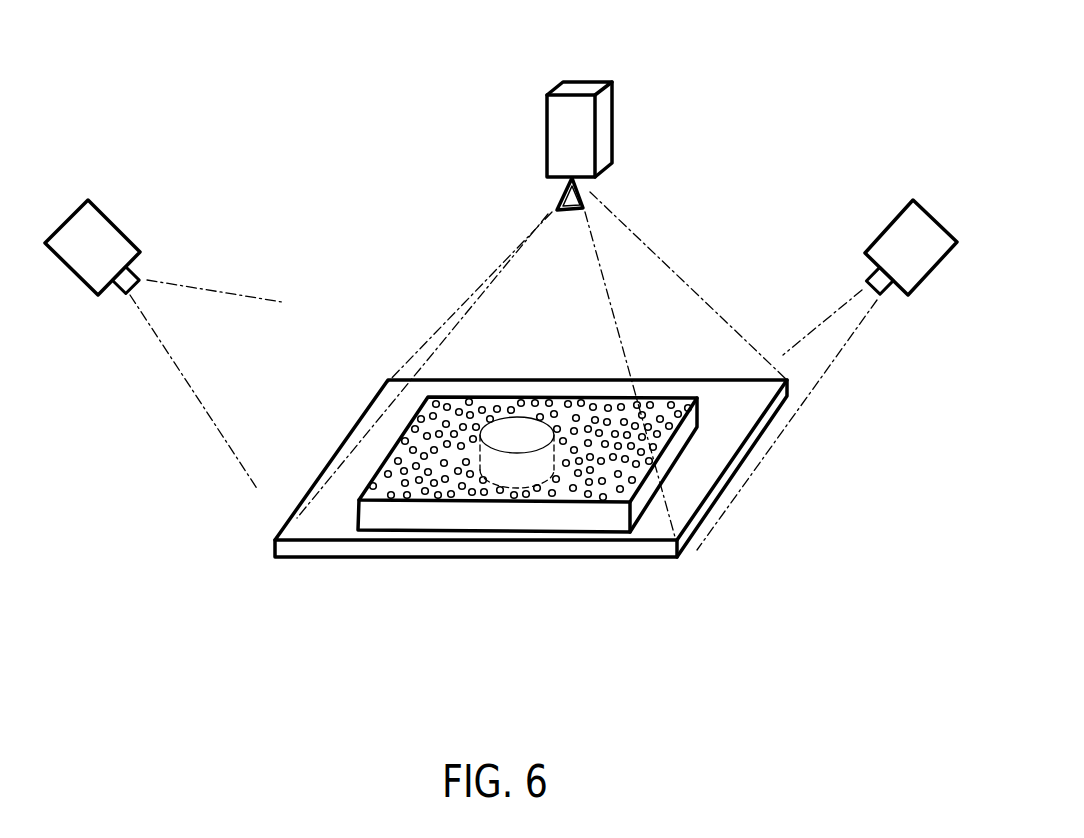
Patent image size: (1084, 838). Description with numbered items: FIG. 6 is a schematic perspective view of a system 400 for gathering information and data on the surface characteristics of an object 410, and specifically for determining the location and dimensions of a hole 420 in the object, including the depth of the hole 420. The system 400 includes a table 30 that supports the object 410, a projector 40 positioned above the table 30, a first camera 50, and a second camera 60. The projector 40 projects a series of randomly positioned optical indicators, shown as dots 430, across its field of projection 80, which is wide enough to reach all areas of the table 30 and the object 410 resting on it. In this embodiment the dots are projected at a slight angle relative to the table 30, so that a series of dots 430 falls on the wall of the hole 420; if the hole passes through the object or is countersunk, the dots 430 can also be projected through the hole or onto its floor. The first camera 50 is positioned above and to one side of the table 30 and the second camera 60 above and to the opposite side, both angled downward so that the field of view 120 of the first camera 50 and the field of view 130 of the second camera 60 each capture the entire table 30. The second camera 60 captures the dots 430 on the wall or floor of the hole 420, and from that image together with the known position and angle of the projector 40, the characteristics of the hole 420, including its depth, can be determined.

The system 400 is at (276, 155).
The table 30 is at (692, 466).
The projector 40 is at (558, 82).
The first camera 50 is at (83, 238).
The second camera 60 is at (880, 237).
The field of projection 80 is at (523, 292).
The field of view of the first camera 120 is at (183, 327).
The field of view of the second camera 130 is at (808, 348).
The object 410 is at (450, 520).
The hole 420 is at (553, 440).
The dots 430 is at (490, 433).